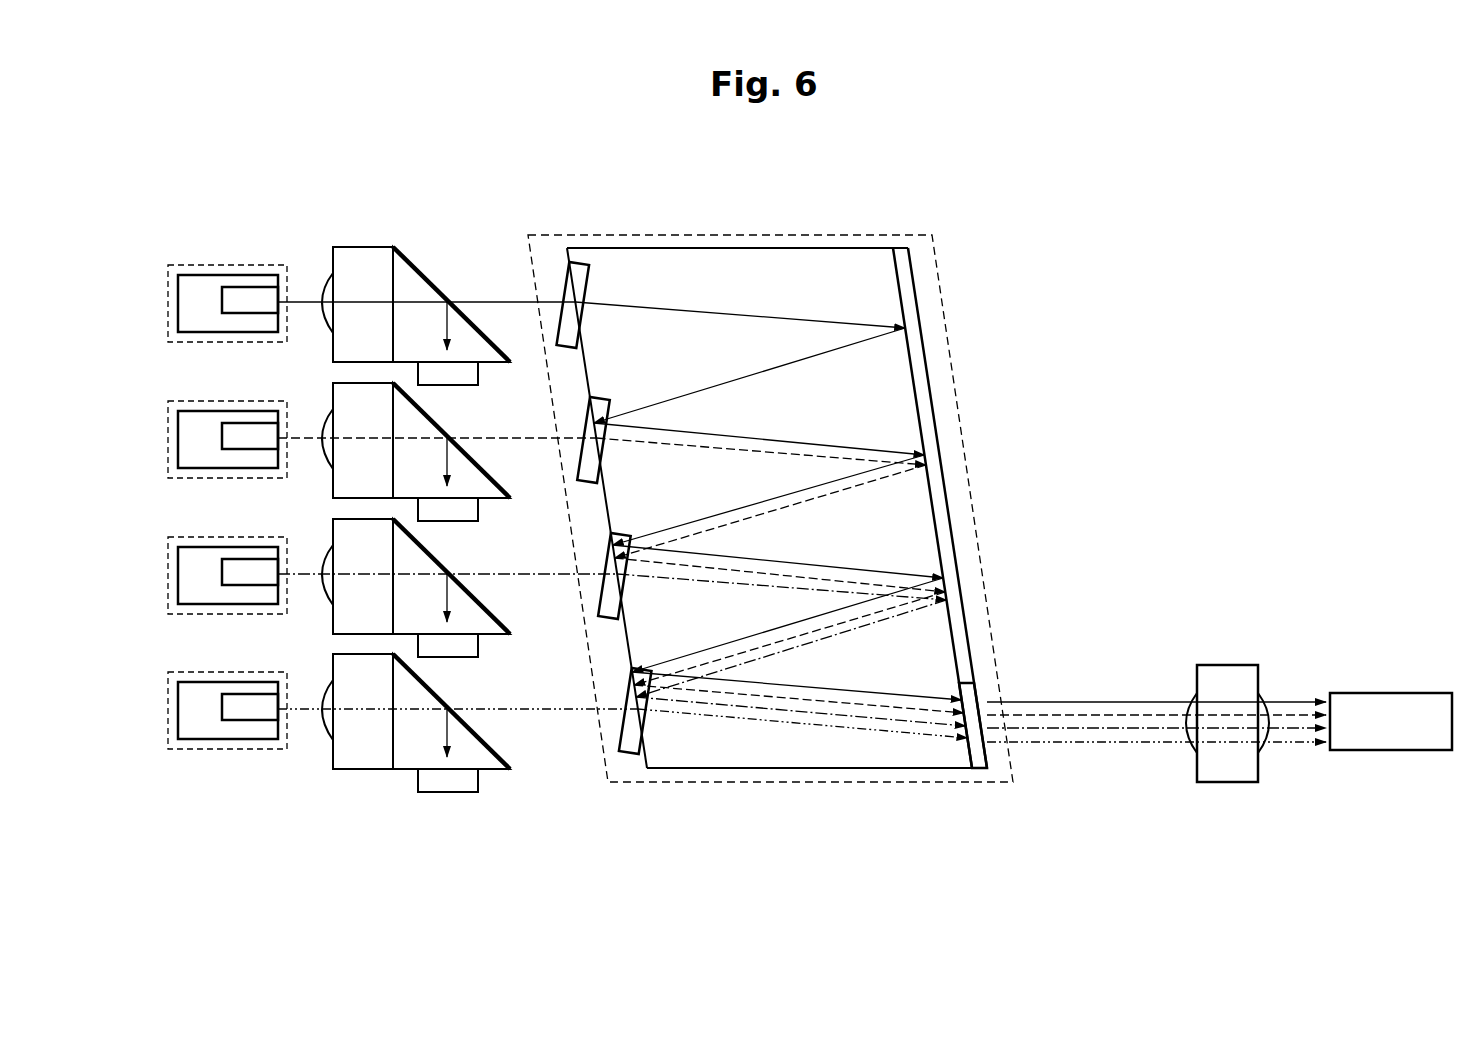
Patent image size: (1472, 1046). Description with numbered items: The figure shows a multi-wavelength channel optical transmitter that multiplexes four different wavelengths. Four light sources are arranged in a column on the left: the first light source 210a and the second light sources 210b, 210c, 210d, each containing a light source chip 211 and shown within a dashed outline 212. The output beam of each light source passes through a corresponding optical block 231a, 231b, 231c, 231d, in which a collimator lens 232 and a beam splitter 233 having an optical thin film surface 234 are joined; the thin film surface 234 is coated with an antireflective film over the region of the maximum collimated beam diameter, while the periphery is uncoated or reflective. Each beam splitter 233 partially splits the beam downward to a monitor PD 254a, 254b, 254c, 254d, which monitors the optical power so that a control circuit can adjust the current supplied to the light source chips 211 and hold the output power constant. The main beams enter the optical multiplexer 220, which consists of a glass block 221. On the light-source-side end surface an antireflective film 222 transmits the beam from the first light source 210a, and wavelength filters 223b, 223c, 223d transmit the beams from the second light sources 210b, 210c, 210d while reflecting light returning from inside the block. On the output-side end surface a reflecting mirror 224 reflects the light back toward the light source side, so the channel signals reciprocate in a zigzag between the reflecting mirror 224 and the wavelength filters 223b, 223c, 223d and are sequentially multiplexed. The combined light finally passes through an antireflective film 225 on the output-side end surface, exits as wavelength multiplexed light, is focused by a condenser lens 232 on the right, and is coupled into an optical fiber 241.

The first light source 210a is at (167, 301).
The second light source 210b is at (167, 437).
The second light source 210c is at (167, 572).
The second light source 210d is at (167, 708).
The light source chip 211 is at (233, 314).
The light source housing 212 is at (205, 274).
The optical multiplexer 220 is at (840, 234).
The glass block 221 is at (720, 247).
The antireflective film 222 is at (556, 266).
The wavelength filter 223b is at (580, 460).
The wavelength filter 223c is at (597, 588).
The wavelength filter 223d is at (622, 736).
The reflecting mirror 224 is at (960, 520).
The antireflective film 225 is at (988, 696).
The optical block 231a is at (333, 258).
The optical block 231b is at (333, 398).
The optical block 231c is at (333, 534).
The optical block 231d is at (333, 670).
The collimator lens / condenser lens 232 is at (1220, 664).
The beam splitter 233 is at (414, 268).
The optical thin film surface 234 is at (446, 290).
The monitor PD 254a is at (452, 386).
The monitor PD 254b is at (452, 522).
The monitor PD 254c is at (452, 658).
The monitor PD 254d is at (452, 794).
The optical fiber 241 is at (1386, 692).